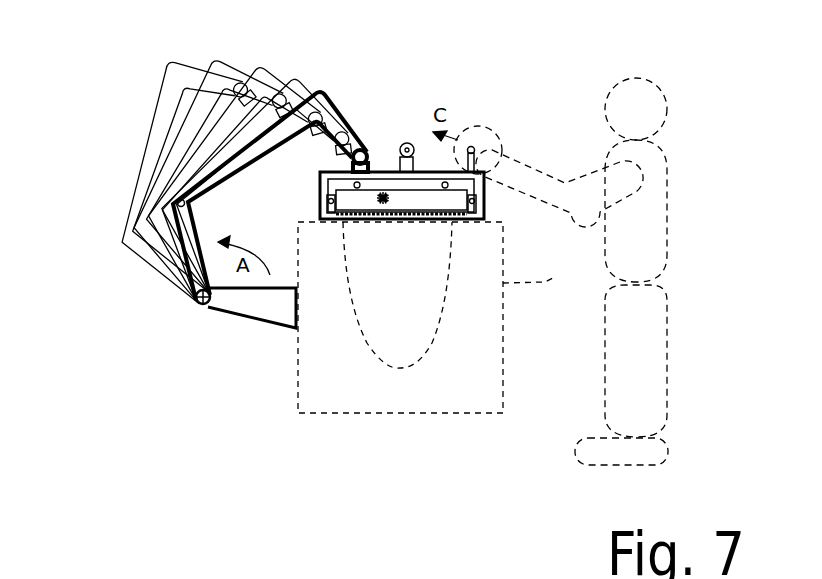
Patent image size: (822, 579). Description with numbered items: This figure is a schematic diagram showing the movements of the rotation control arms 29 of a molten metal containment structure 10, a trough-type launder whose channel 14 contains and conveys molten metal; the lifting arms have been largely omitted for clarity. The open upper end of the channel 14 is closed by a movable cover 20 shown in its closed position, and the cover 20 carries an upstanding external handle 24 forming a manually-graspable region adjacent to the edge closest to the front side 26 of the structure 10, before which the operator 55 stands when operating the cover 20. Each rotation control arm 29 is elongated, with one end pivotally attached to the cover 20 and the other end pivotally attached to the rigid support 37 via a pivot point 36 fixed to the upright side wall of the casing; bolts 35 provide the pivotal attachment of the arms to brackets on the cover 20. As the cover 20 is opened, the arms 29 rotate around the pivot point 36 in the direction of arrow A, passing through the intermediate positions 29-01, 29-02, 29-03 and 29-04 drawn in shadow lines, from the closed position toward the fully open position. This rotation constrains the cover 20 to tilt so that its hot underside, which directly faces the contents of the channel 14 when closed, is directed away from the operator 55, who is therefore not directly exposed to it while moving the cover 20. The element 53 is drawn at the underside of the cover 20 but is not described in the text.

The molten metal containment structure 10 is at (404, 390).
The channel 14 is at (415, 332).
The movable cover 20 is at (320, 192).
The external handle 24 is at (468, 146).
The front side 26 is at (538, 264).
The rotation control arm 29 is at (323, 93).
The intermediate position 29-01 is at (298, 82).
The intermediate position 29-02 is at (263, 68).
The intermediate position 29-03 is at (215, 68).
The intermediate position 29-04 is at (175, 77).
The bolt 35 is at (409, 138).
The pivot point 36 is at (196, 306).
The rigid support 37 is at (230, 300).
The light source 53 is at (384, 205).
The operator 55 is at (655, 318).